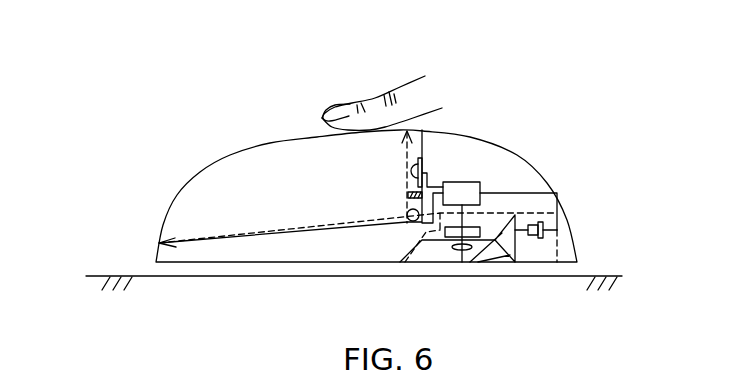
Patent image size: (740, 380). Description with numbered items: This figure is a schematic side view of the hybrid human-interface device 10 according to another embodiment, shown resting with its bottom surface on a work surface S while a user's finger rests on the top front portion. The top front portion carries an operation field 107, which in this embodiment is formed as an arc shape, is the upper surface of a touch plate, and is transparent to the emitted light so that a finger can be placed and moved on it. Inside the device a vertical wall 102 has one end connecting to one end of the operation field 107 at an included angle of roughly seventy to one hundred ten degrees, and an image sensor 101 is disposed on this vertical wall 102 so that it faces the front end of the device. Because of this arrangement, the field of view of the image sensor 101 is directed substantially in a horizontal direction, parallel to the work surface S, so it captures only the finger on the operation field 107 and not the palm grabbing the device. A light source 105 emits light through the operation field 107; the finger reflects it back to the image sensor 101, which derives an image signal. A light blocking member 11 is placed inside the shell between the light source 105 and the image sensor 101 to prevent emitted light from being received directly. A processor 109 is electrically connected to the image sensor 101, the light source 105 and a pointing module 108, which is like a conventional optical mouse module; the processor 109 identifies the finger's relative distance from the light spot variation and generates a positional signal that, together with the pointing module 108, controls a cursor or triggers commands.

The hybrid human-interface device 10 is at (591, 90).
The operation field 107 is at (275, 146).
The vertical wall 102 is at (422, 138).
The image sensor 101 is at (425, 165).
The processor 109 is at (480, 182).
The pointing module 108 is at (557, 258).
The light blocking member 11 is at (407, 207).
The light source 105 is at (409, 220).
The work surface S is at (143, 275).